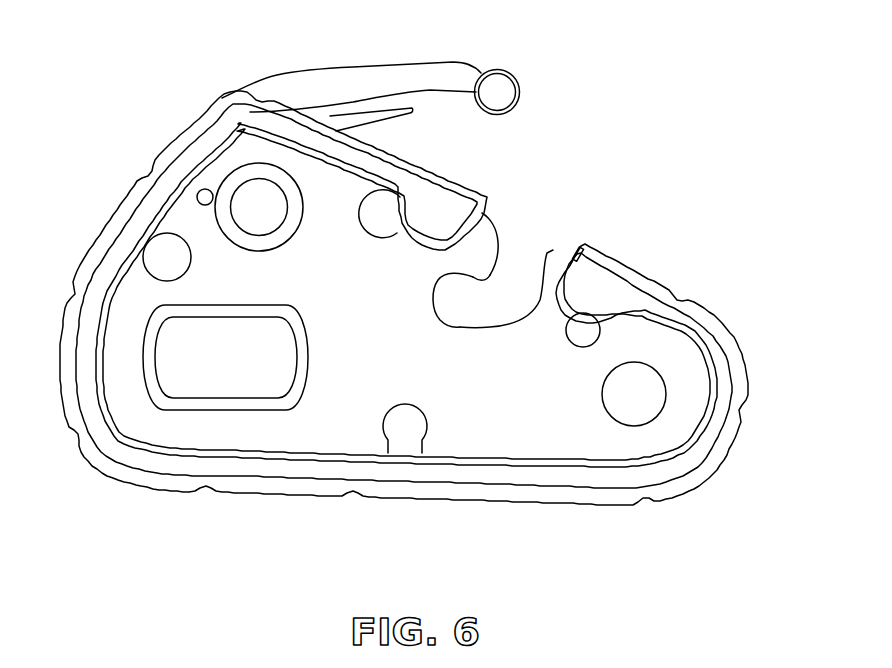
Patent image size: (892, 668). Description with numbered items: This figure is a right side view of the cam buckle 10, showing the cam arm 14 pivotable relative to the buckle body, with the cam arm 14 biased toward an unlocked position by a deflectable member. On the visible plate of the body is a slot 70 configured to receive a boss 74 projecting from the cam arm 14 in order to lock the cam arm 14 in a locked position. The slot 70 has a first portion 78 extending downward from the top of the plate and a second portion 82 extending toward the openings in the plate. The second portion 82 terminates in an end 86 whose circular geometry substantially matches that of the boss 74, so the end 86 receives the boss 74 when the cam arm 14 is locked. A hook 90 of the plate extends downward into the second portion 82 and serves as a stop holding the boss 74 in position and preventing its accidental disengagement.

The cam buckle 10 is at (692, 85).
The cam arm 14 is at (387, 67).
The boss 74 is at (503, 97).
The hook 90 is at (494, 250).
The slot 70 is at (503, 270).
The first portion 78 is at (522, 250).
The end 86 is at (437, 287).
The second portion 82 is at (453, 303).